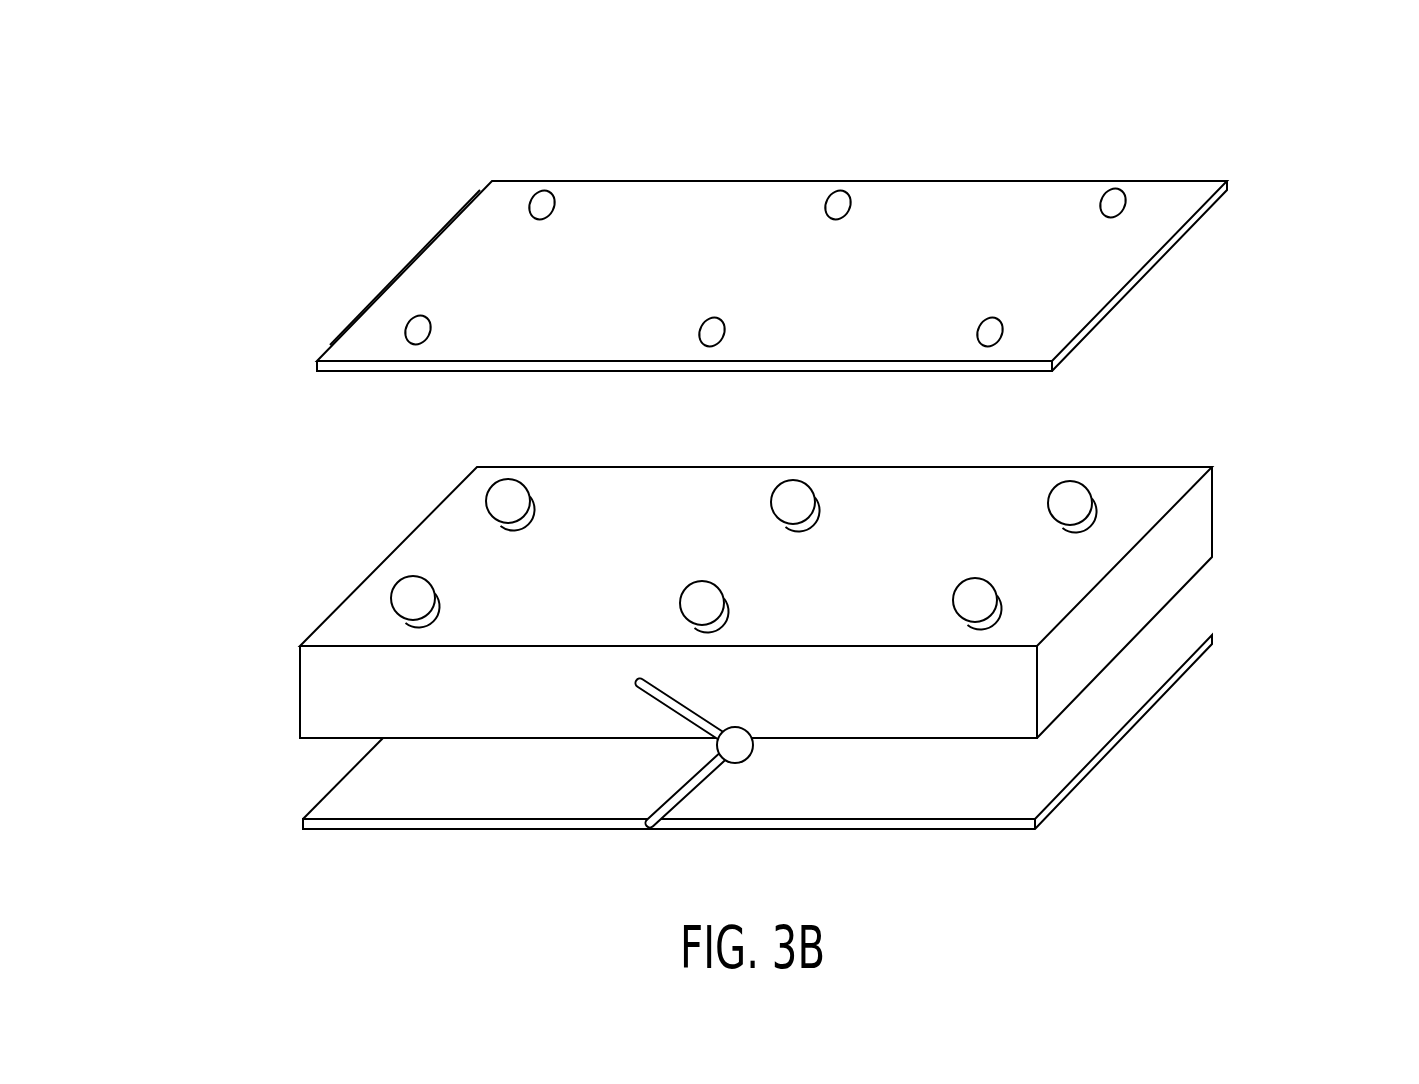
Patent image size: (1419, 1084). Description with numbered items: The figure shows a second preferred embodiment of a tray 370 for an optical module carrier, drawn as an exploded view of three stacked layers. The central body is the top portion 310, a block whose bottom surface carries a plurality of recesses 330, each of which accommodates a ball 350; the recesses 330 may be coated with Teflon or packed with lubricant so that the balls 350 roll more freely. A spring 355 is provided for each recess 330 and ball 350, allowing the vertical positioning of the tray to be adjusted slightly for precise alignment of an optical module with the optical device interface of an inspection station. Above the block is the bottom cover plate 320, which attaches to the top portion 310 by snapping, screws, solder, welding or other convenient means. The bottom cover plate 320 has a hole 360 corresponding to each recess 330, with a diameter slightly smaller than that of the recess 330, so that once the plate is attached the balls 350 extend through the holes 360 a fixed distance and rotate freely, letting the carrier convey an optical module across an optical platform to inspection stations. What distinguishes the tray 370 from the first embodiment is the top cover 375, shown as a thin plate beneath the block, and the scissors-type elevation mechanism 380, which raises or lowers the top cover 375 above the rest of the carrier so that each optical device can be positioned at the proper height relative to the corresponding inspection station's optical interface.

The top portion 310 is at (295, 830).
The bottom cover plate 320 is at (1245, 202).
The recess 330 is at (540, 488).
The ball 350 is at (485, 493).
The spring 355 is at (532, 522).
The hole 360 is at (567, 203).
The tray 370 is at (330, 190).
The top cover 375 is at (1127, 745).
The elevation mechanism 380 is at (750, 768).